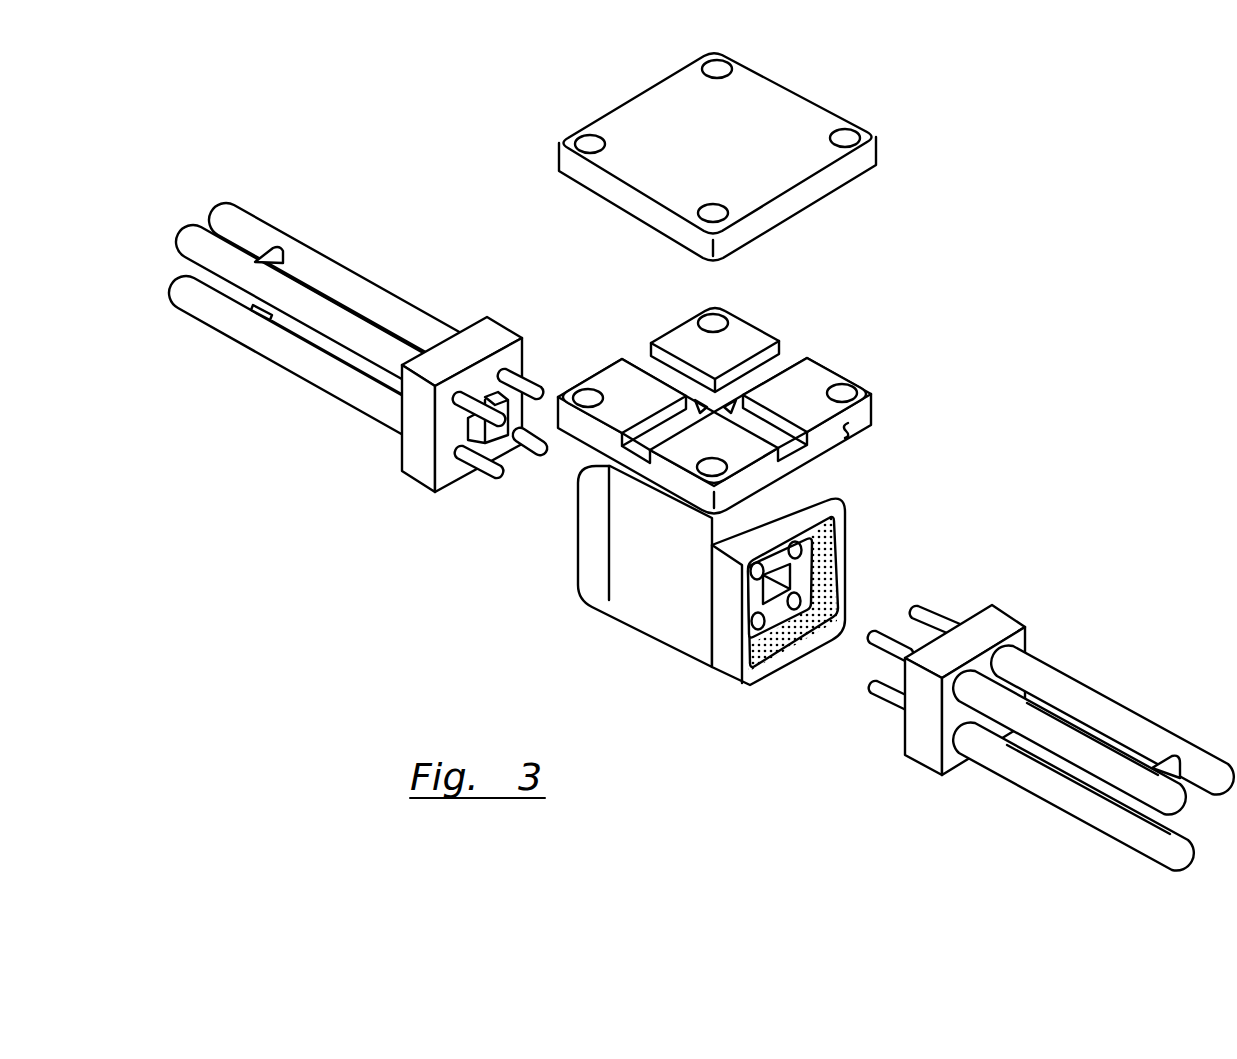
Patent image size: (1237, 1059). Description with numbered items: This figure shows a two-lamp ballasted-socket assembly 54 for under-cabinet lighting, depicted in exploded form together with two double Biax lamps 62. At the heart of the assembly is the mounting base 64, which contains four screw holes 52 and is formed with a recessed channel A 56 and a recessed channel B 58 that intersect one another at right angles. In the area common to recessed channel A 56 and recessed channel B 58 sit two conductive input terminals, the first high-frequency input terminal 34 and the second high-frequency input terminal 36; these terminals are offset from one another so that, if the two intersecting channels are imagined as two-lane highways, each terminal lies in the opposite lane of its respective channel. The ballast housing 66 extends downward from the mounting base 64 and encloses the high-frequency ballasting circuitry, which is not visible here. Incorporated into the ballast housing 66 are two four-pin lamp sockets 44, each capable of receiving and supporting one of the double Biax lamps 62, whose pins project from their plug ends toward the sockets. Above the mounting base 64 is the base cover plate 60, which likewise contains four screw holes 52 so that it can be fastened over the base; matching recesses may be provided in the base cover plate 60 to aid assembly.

The high-frequency input terminal #1 34 is at (729, 400).
The high-frequency input terminal #2 36 is at (698, 400).
The four-pin lamp socket 44 is at (578, 522).
The screw hole 52 is at (852, 128).
The two-lamp ballasted-socket assembly 54 is at (664, 652).
The recessed channel A 56 is at (795, 352).
The recessed channel B 58 is at (813, 466).
The base cover plate 60 is at (808, 212).
The double Biax lamp 62 is at (505, 327).
The mounting base 64 is at (853, 433).
The ballast housing 66 is at (627, 620).